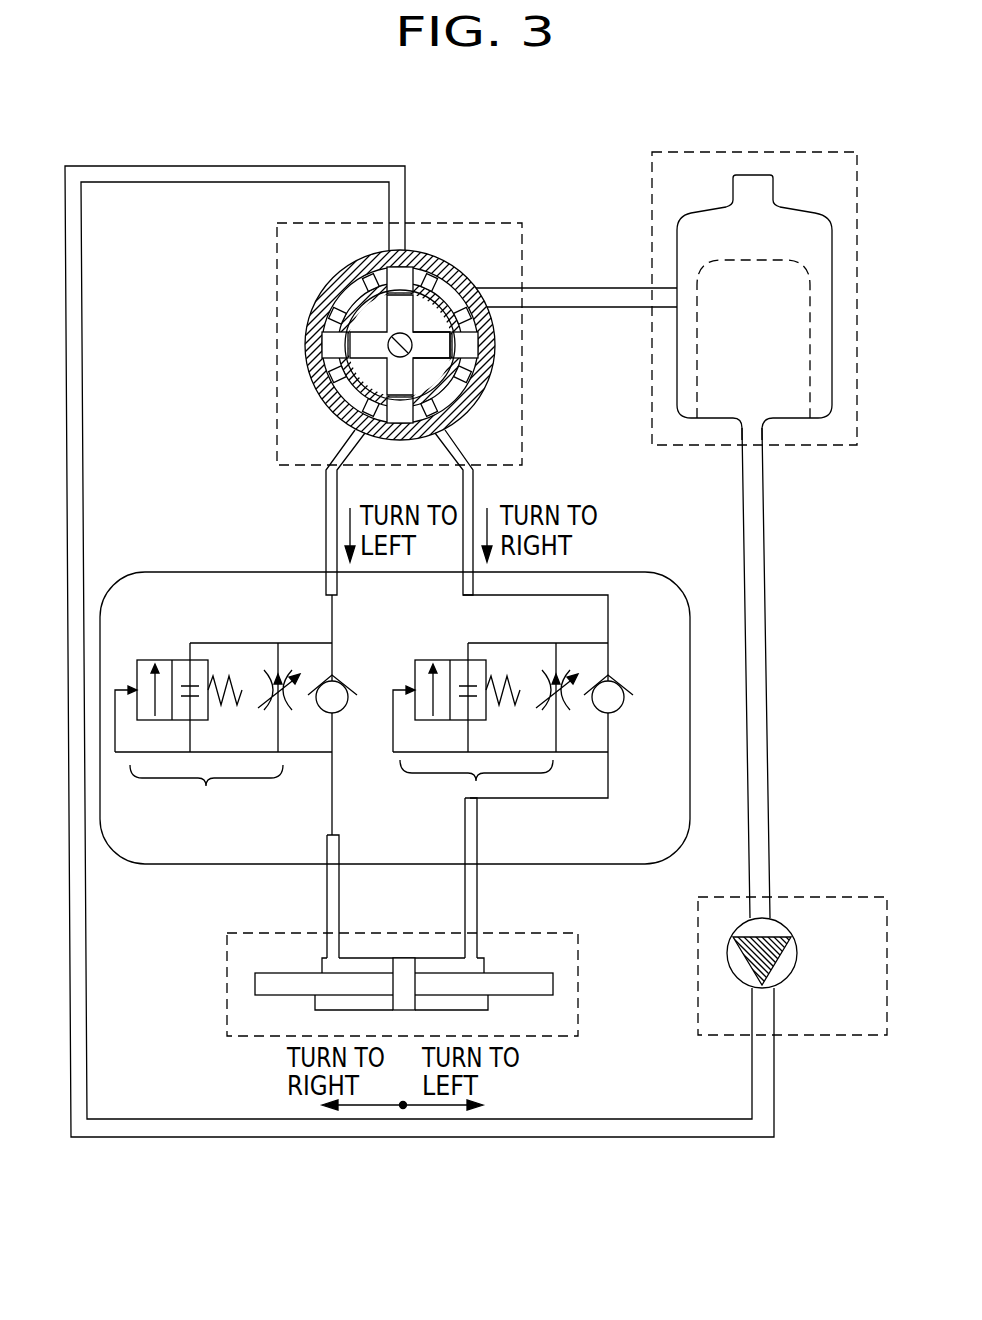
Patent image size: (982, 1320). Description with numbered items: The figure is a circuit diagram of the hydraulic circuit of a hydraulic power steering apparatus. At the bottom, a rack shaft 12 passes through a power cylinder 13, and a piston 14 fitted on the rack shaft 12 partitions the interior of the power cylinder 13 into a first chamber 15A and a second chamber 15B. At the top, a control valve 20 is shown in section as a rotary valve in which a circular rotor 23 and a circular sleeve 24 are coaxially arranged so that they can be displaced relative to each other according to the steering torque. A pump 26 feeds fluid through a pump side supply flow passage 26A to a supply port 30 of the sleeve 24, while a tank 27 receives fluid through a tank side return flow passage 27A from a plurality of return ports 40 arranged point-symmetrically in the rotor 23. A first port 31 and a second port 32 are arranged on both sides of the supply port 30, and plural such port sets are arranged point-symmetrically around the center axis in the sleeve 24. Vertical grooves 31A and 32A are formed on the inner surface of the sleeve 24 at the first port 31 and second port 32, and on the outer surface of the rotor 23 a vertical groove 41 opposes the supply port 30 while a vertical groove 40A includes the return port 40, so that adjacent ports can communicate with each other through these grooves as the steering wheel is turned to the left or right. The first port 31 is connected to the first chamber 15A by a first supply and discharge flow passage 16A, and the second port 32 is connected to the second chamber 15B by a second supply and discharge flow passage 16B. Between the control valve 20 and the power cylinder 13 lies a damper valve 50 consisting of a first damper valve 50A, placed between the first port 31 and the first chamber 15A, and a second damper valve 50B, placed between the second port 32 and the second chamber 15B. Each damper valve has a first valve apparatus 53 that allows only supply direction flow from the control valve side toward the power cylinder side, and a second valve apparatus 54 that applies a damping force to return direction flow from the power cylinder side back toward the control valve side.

The rack shaft 12 is at (255, 985).
The power cylinder 13 is at (222, 936).
The piston 14 is at (407, 958).
The first chamber 15A is at (330, 1010).
The second chamber 15B is at (483, 1010).
The first supply and discharge flow passage 16A is at (327, 896).
The second supply and discharge flow passage 16B is at (477, 880).
The control valve 20 is at (268, 239).
The rotor 23 is at (345, 347).
The sleeve 24 is at (338, 385).
The pump 26 is at (870, 888).
The pump side supply flow passage 26A is at (212, 166).
The tank 27 is at (848, 148).
The tank side return flow passage 27A is at (598, 282).
The supply port 30 is at (402, 270).
The first port 31 is at (375, 278).
The vertical groove 31A is at (338, 300).
The second port 32 is at (440, 280).
The vertical groove 32A is at (452, 284).
The return port 40 is at (424, 348).
The vertical groove 40A is at (424, 332).
The vertical groove 41 is at (388, 270).
The damper valve 50 is at (153, 560).
The first damper valve 50A is at (230, 628).
The second damper valve 50B is at (478, 628).
The first valve apparatus 53 is at (340, 712).
The second valve apparatus 54 is at (476, 782).